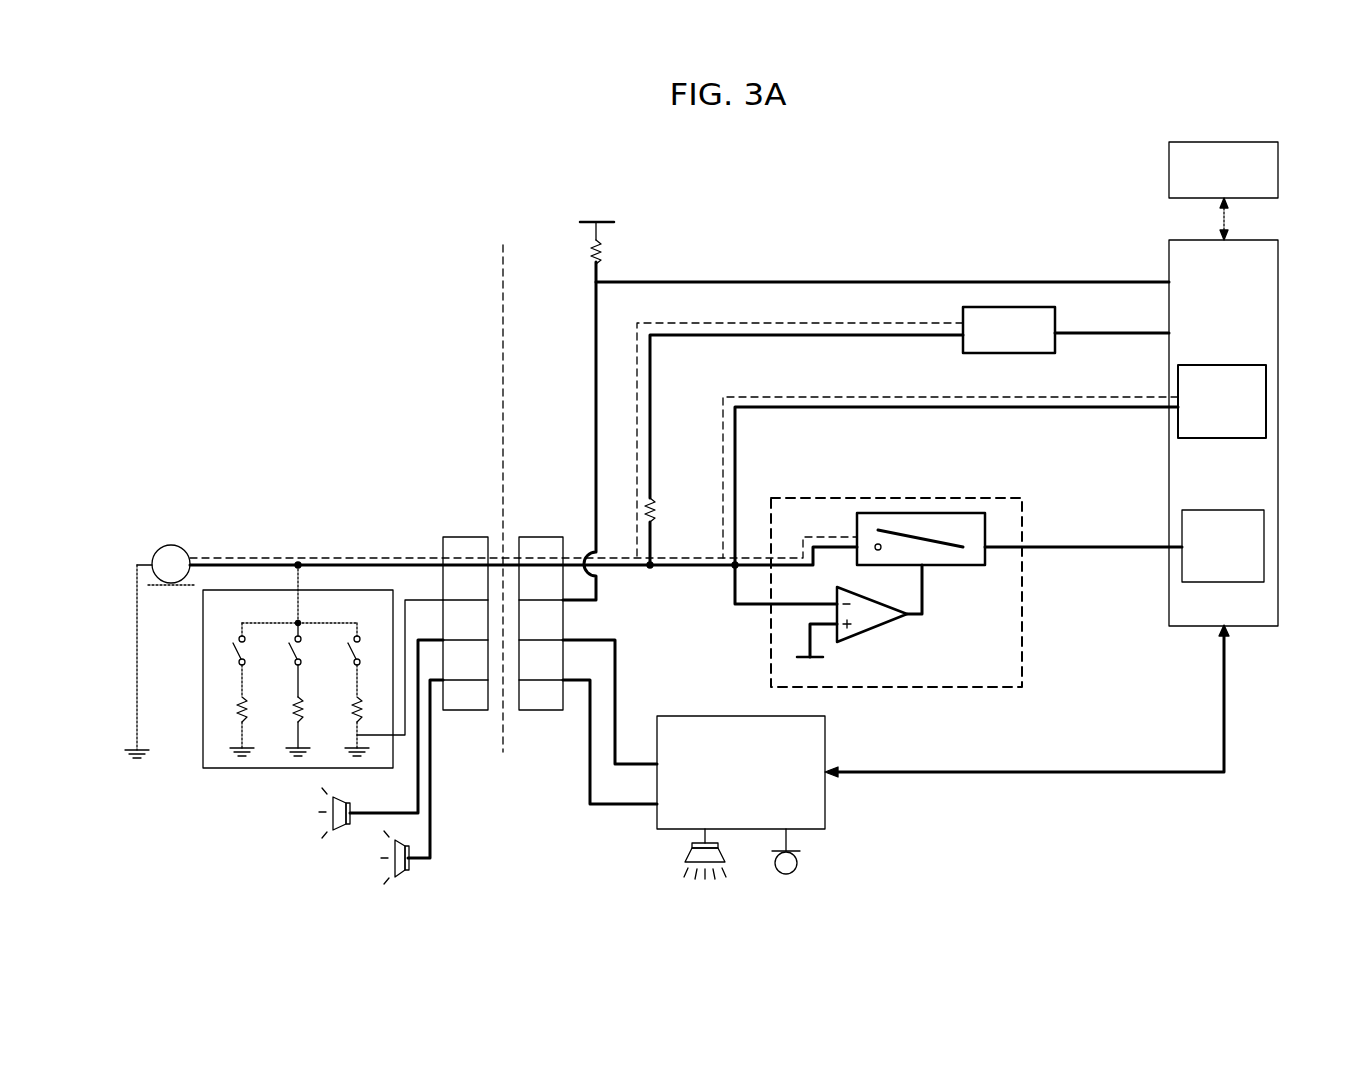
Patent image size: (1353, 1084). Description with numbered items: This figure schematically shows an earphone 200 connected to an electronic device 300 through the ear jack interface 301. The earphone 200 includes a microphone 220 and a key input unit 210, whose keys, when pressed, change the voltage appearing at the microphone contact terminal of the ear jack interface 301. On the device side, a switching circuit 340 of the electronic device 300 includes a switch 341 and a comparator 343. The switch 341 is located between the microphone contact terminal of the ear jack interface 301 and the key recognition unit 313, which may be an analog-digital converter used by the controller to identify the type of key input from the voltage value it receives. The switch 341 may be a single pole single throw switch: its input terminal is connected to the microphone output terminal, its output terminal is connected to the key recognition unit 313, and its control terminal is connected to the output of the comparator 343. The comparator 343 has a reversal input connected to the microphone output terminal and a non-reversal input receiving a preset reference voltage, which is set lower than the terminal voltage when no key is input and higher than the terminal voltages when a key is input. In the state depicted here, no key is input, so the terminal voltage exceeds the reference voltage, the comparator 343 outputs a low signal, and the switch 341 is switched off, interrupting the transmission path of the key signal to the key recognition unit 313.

The earphone 200 is at (347, 222).
The microphone 220 is at (152, 551).
The key input unit 210 is at (223, 770).
The electronic device 300 is at (962, 190).
The ear jack interface 301 is at (537, 537).
The key recognition unit 313 is at (1264, 545).
The switching circuit 340 is at (1022, 632).
The switch 341 is at (917, 513).
The comparator 343 is at (872, 630).